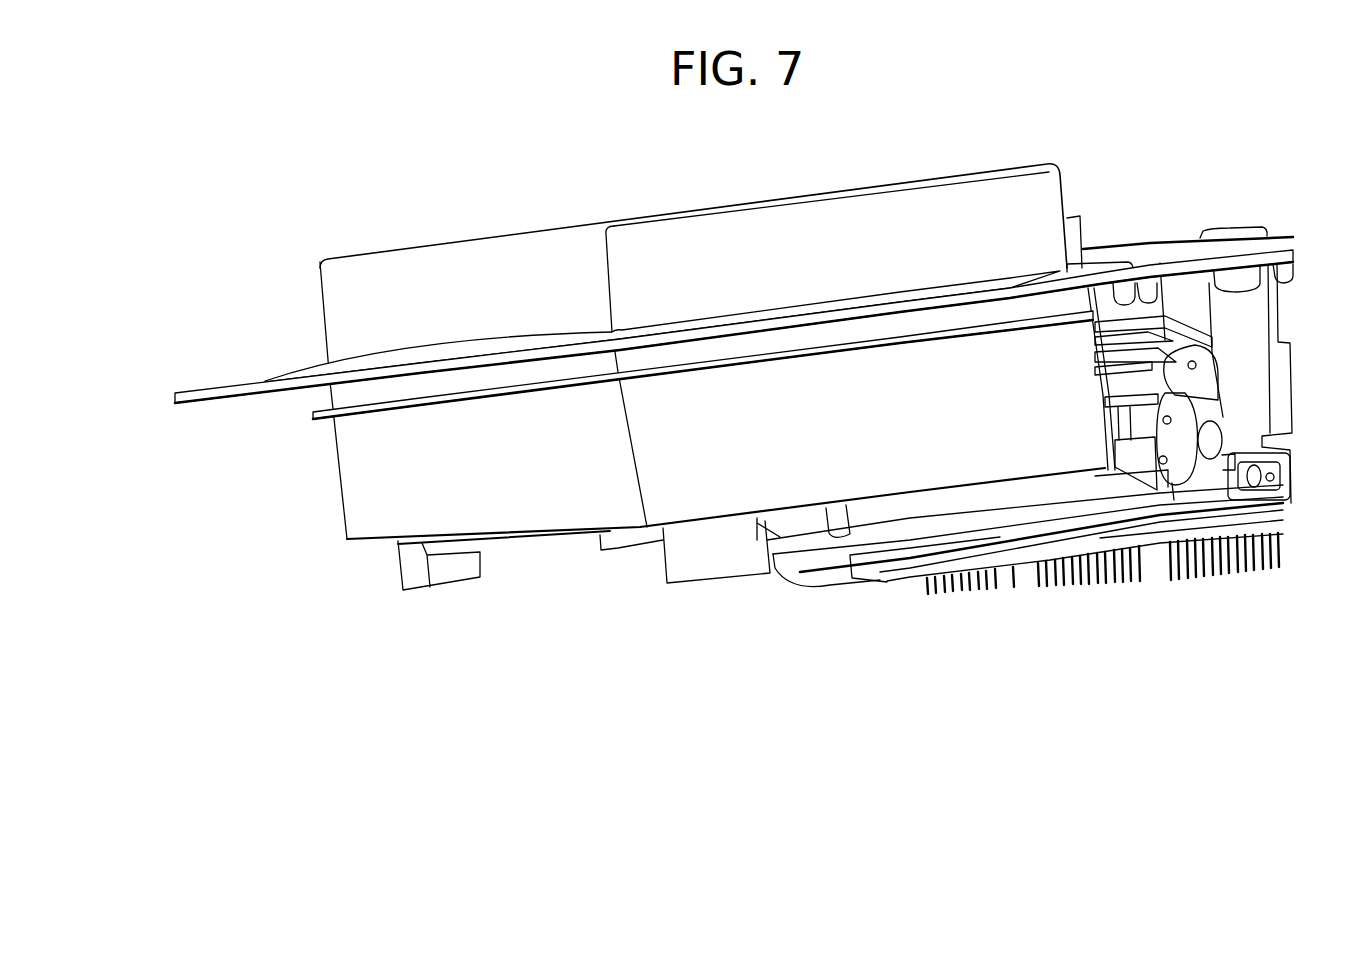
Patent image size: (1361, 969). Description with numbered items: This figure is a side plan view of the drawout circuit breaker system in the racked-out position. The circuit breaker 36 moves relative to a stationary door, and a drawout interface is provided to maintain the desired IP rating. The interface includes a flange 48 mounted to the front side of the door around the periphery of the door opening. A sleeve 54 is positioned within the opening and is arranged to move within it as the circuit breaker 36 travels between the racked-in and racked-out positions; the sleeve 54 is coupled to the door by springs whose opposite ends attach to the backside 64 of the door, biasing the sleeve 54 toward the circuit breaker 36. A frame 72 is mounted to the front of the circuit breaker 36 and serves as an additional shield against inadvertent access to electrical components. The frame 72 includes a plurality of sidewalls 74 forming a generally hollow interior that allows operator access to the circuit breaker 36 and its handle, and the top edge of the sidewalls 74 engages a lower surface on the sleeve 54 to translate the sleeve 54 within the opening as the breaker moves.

The circuit breaker 36 is at (753, 528).
The flange 48 is at (290, 368).
The sleeve 54 is at (1063, 180).
The backside 64 is at (218, 405).
The frame 72 is at (378, 518).
The sidewalls 74 is at (485, 474).